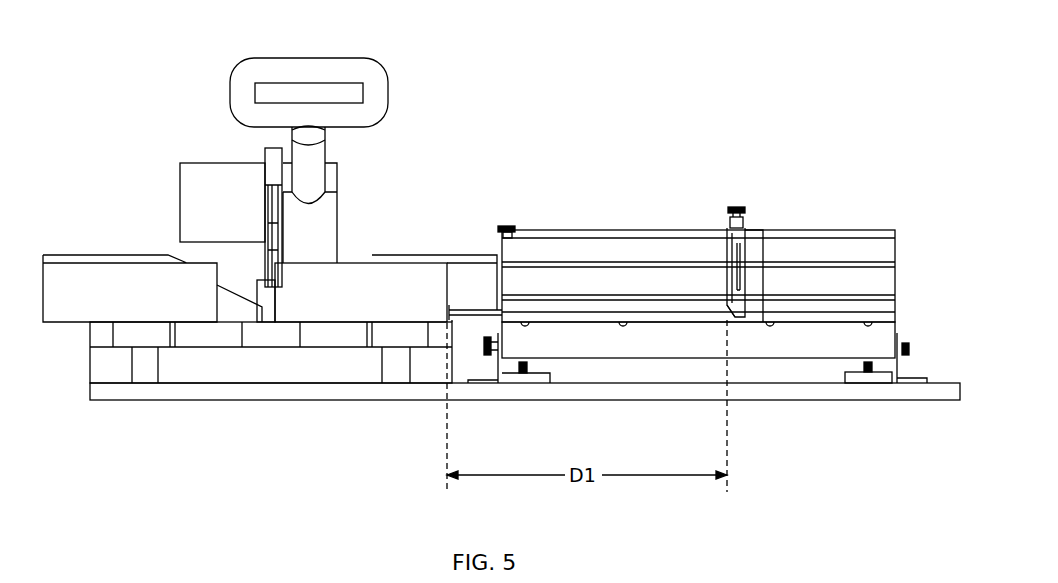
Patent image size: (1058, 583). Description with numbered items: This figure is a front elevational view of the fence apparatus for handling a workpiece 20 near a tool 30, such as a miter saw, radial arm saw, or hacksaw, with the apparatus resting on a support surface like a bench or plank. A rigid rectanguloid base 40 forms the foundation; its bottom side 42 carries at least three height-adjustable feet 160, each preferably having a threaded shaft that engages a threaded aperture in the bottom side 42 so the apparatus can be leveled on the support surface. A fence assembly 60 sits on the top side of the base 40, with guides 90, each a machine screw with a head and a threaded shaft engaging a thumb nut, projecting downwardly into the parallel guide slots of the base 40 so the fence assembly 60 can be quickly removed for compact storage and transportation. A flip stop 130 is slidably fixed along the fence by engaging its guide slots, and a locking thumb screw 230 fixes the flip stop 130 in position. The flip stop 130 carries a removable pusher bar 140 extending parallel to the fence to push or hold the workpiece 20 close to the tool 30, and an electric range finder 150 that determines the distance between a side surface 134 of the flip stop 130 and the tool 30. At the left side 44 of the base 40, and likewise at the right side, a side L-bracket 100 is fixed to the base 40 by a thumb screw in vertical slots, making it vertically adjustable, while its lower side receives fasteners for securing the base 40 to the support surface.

The workpiece 20 is at (353, 250).
The tool 30 is at (317, 235).
The base 40 is at (798, 340).
The bottom side 42 is at (632, 360).
The left side 44 is at (490, 337).
The fence assembly 60 is at (543, 228).
The guide 90 is at (508, 223).
The side L-bracket 100 is at (483, 383).
The flip stop 130 is at (760, 248).
The side surface 134 is at (730, 273).
The pusher bar 140 is at (730, 312).
The range finder 150 is at (745, 262).
The height-adjustable foot 160 is at (542, 377).
The locking thumb screw 230 is at (735, 207).